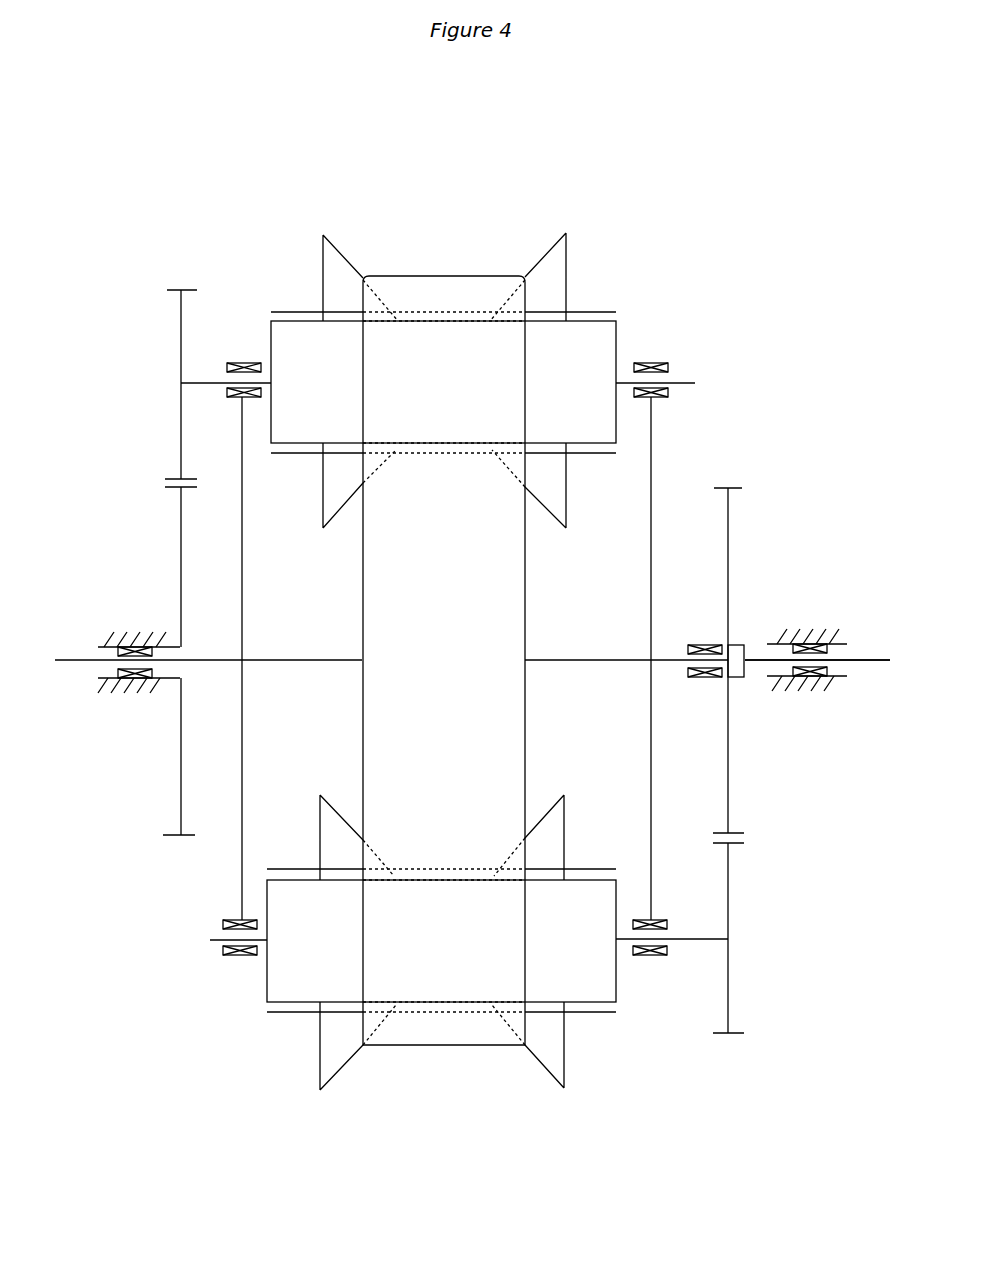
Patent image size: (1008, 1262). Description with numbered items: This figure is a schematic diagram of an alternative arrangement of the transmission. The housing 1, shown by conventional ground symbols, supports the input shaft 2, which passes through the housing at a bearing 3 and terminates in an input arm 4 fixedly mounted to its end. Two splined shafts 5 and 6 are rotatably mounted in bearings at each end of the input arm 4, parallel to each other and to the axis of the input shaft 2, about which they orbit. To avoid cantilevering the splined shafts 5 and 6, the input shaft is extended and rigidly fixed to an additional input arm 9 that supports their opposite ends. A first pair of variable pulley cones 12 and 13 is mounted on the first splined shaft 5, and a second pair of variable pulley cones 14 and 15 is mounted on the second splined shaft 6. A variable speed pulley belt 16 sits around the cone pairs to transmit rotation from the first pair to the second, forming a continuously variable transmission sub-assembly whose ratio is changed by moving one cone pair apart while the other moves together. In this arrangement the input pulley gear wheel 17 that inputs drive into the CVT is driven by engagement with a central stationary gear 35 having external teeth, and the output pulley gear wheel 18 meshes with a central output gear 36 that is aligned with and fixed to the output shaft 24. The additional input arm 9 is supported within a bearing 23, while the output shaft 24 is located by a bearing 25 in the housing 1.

The housing 1 is at (120, 634).
The input shaft 2 is at (78, 664).
The bearing 3 is at (131, 680).
The input arm 4 is at (242, 880).
The first splined shaft 5 is at (278, 338).
The second splined shaft 6 is at (280, 978).
The additional input arm 9 is at (652, 459).
The variable pulley cone 12 is at (330, 277).
The variable pulley cone 13 is at (565, 263).
The variable pulley cone 14 is at (330, 1052).
The variable pulley cone 15 is at (555, 1057).
The variable speed pulley belt 16 is at (438, 1035).
The input pulley gear wheel 17 is at (180, 330).
The output pulley gear wheel 18 is at (728, 992).
The bearing 23 is at (713, 676).
The output shaft 24 is at (858, 663).
The bearing 25 is at (808, 672).
The central stationary gear 35 is at (180, 524).
The central output gear 36 is at (732, 541).